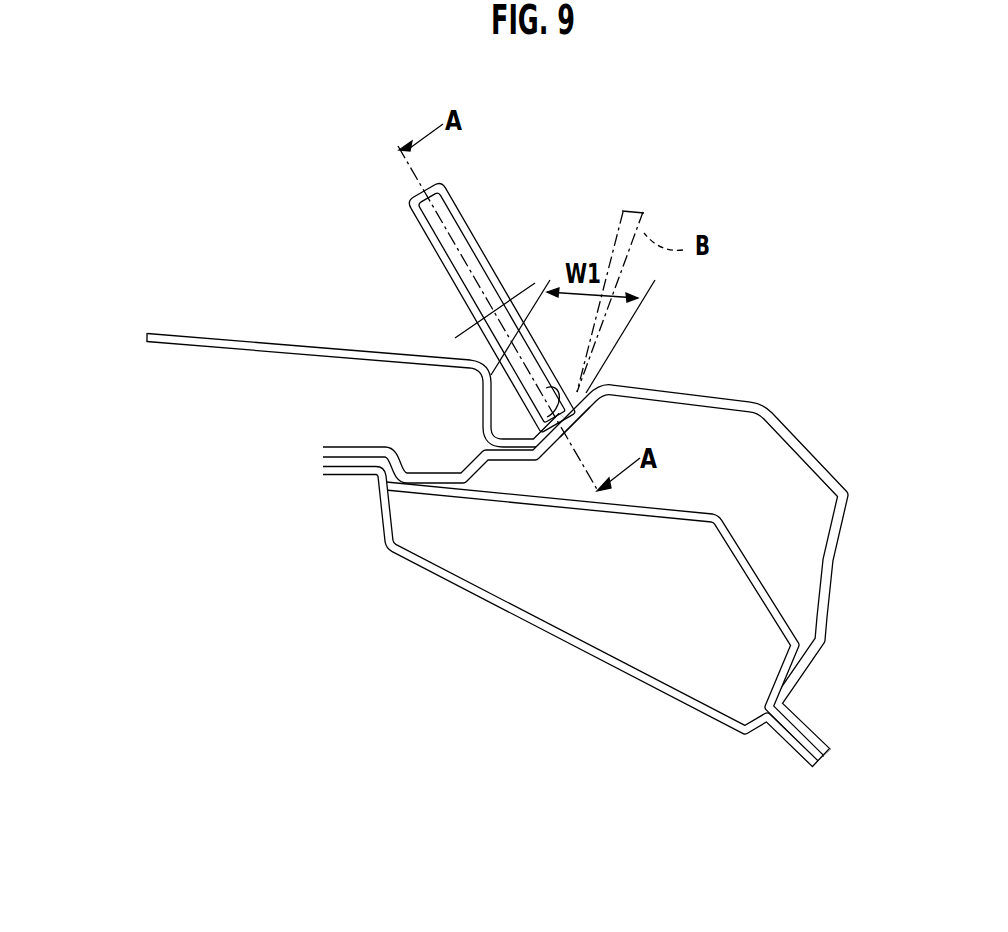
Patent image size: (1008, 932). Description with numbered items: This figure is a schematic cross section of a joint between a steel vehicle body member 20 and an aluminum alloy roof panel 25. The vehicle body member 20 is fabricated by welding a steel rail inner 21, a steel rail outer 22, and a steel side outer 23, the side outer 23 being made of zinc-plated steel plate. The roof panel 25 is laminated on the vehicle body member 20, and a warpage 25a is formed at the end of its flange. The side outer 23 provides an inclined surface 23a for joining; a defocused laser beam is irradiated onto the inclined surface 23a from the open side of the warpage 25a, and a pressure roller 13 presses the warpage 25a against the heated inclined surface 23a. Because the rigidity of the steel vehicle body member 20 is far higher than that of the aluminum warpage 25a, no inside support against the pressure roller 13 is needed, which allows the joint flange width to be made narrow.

The pressure roller 13 is at (463, 251).
The vehicle body member 20 is at (583, 578).
The rail inner 21 is at (464, 588).
The rail outer 22 is at (605, 506).
The side outer 23 is at (793, 452).
The inclined surface 23a is at (582, 435).
The roof panel 25 is at (285, 343).
The warpage 25a is at (551, 386).